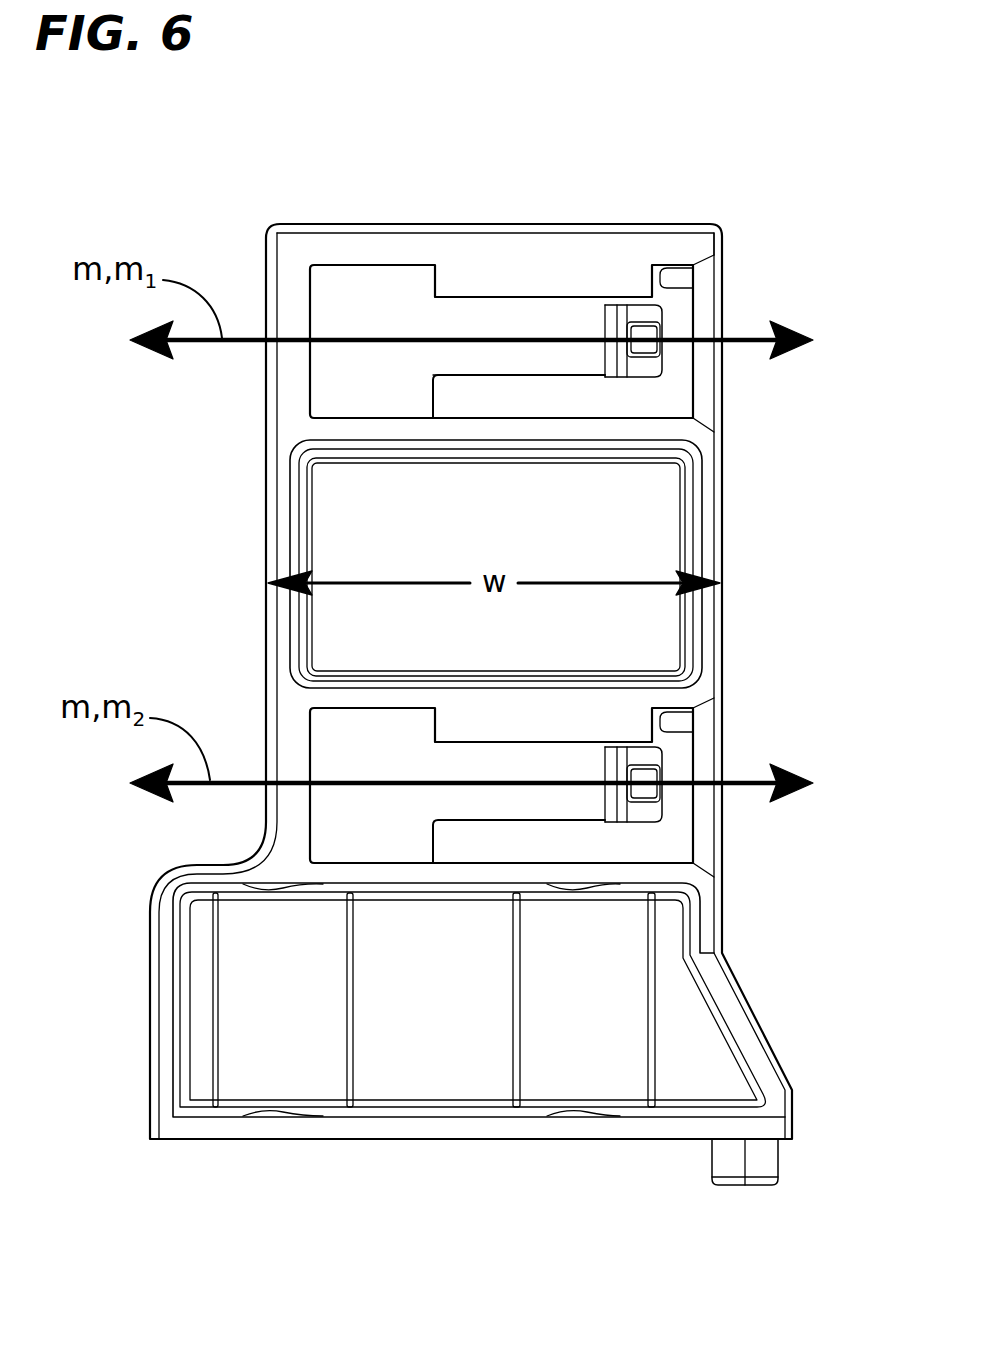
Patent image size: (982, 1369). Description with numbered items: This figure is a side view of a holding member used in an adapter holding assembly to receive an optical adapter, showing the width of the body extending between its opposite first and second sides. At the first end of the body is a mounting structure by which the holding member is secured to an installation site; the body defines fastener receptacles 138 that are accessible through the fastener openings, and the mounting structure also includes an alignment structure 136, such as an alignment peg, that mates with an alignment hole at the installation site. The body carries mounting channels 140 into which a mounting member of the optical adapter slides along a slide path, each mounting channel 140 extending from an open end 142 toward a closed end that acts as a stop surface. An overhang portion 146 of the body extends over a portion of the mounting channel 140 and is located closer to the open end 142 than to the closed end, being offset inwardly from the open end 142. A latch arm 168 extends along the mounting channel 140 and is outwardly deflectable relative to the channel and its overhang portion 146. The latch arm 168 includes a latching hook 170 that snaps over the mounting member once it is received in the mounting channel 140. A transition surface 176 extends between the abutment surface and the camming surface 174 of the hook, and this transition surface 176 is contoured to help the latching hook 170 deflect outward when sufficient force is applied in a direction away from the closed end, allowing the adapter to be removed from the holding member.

The alignment structure 136 is at (780, 1155).
The fastener receptacles 138 is at (313, 1017).
The mounting channel 140 is at (345, 268).
The open end 142 is at (703, 263).
The overhang portion 146 is at (490, 304).
The latch arm 168 is at (483, 362).
The latching hook 170 is at (660, 832).
The camming surface 174 is at (640, 312).
The transition surface 176 is at (612, 312).